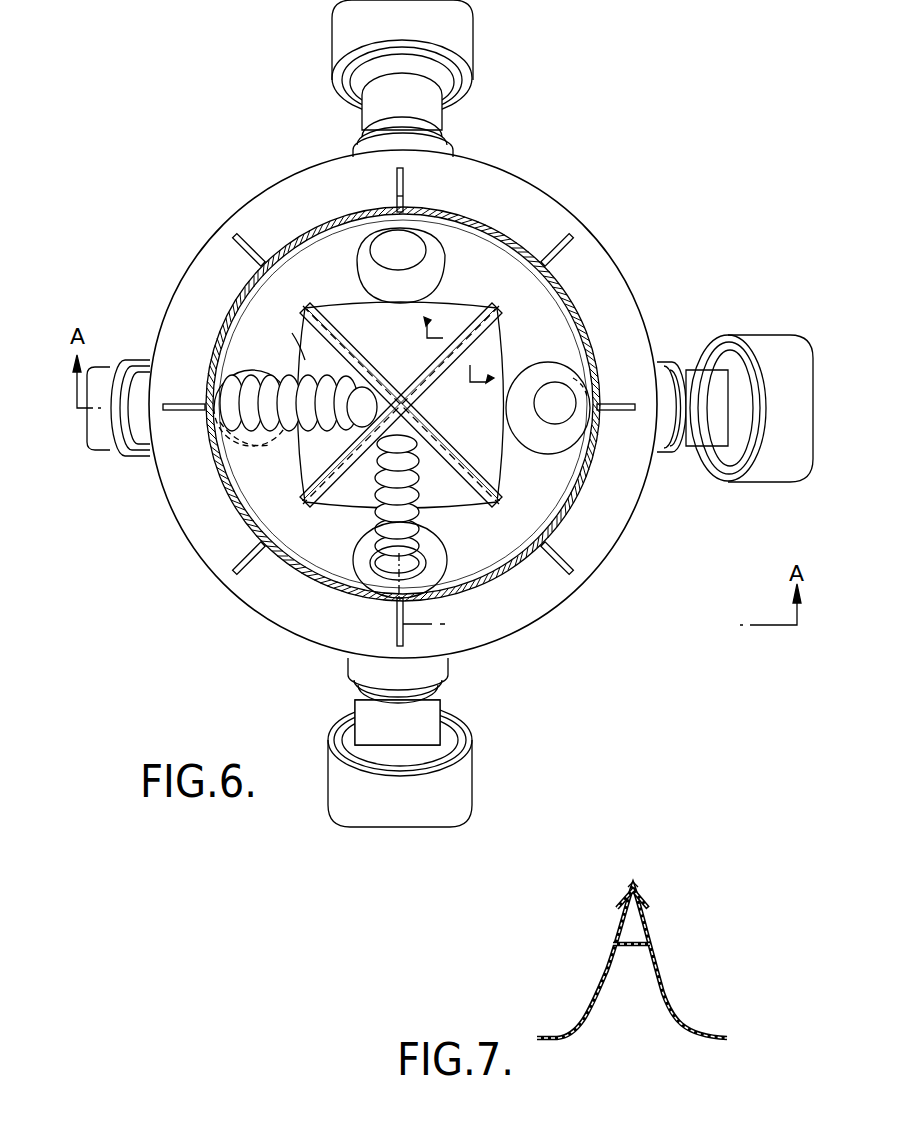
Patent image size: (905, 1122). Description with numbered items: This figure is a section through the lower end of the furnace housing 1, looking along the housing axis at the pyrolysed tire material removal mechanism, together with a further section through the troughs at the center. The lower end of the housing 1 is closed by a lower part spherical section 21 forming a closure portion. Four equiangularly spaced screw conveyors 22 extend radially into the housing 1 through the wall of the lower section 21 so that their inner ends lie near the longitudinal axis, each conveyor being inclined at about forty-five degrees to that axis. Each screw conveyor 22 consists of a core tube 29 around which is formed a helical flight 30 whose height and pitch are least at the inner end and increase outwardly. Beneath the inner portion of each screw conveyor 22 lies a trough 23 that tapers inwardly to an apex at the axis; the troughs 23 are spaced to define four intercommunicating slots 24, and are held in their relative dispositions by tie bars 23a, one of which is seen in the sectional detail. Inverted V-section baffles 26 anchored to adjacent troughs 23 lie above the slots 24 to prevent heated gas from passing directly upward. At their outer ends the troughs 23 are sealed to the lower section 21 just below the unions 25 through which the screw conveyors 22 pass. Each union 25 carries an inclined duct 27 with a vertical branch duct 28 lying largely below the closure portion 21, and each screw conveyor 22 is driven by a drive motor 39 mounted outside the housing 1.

In FIG. 6, the housing 1 is at (577, 330).
In FIG. 6, the lower part spherical section 21 is at (415, 247).
In FIG. 6, the screw conveyor 22 is at (243, 333).
In FIG. 6, the trough 23 is at (365, 340).
In FIG. 7, the trough 23 is at (658, 970).
In FIG. 7, the tie bar 23a is at (632, 945).
In FIG. 6, the slot 24 is at (468, 327).
In FIG. 7, the slot 24 is at (640, 895).
In FIG. 6, the union 25 is at (297, 433).
In FIG. 6, the inverted V-section baffle 26 is at (442, 440).
In FIG. 7, the inverted V-section baffle 26 is at (633, 887).
In FIG. 6, the inclined duct 27 is at (410, 672).
In FIG. 6, the vertical branch duct 28 is at (558, 415).
In FIG. 6, the core tube 29 is at (292, 333).
In FIG. 6, the helical flight 30 is at (262, 443).
In FIG. 6, the drive motor 39 is at (763, 355).